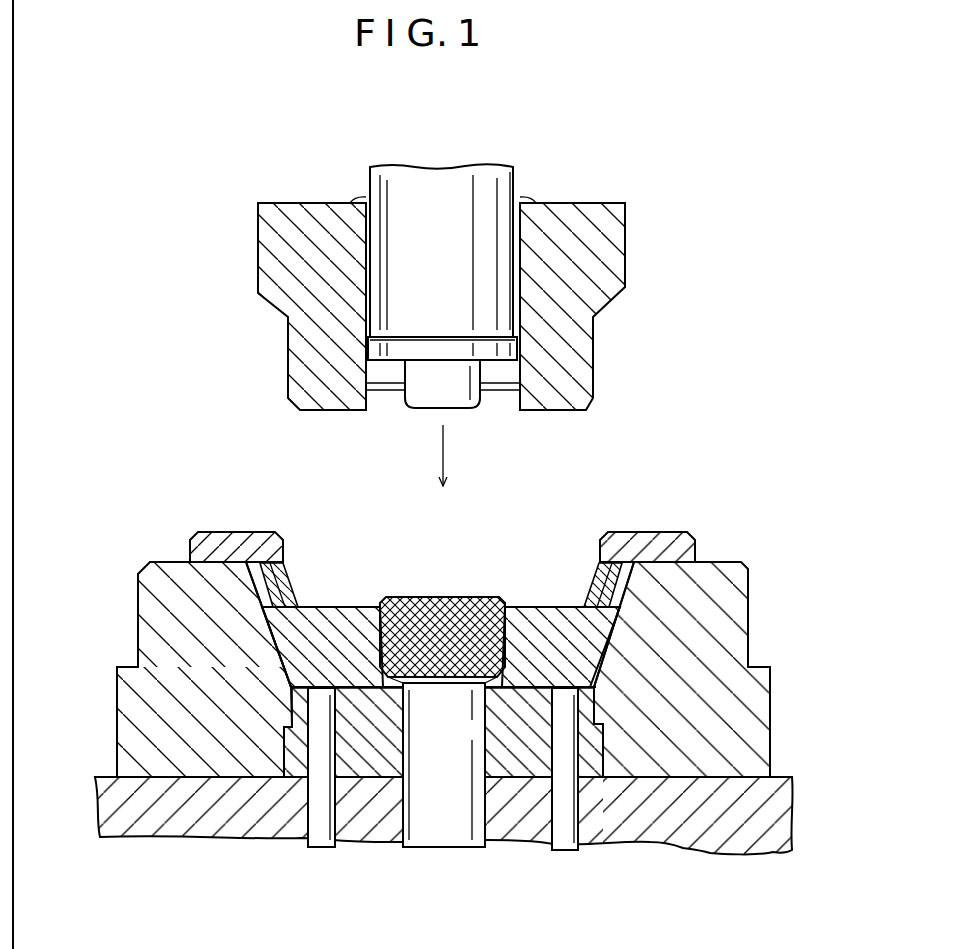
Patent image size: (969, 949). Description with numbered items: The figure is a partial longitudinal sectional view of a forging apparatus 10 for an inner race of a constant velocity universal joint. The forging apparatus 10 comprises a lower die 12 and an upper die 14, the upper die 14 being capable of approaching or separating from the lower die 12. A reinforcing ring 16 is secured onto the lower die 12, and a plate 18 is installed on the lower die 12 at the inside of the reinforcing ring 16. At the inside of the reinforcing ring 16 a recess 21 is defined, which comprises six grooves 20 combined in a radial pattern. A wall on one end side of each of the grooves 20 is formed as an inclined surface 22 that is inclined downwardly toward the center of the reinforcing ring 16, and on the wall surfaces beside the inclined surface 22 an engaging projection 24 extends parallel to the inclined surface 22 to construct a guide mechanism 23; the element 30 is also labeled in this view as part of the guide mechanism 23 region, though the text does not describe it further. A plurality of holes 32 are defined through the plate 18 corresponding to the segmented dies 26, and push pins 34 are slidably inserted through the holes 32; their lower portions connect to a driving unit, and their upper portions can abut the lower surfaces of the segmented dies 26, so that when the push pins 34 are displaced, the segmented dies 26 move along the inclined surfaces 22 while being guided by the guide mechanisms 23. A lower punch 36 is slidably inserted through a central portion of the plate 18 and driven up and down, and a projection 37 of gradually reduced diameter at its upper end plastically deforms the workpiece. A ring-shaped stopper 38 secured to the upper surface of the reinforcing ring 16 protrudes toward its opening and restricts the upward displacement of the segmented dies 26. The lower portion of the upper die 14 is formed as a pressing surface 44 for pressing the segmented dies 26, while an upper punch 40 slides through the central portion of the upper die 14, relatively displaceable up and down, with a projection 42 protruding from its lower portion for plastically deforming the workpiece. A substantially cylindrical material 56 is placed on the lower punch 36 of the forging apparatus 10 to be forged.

The forging apparatus 10 is at (636, 146).
The lower die 12 is at (736, 862).
The upper die 14 is at (605, 319).
The reinforcing ring 16 is at (770, 740).
The plate 18 is at (522, 748).
The grooves 20 is at (291, 640).
The recess 21 is at (363, 657).
The inclined surface 22 is at (257, 592).
The guide mechanism 23 is at (446, 561).
The engaging projection 24 is at (262, 563).
The segmented dies 26 is at (338, 605).
The elastic member 30 is at (330, 687).
The holes 32 is at (318, 750).
The push pins 34 is at (322, 845).
The lower punch 36 is at (443, 823).
The projection 37 is at (444, 685).
The stopper 38 is at (222, 532).
The upper punch 40 is at (441, 167).
The projection 42 is at (422, 395).
The pressing surface 44 is at (547, 402).
The material 56 is at (474, 595).